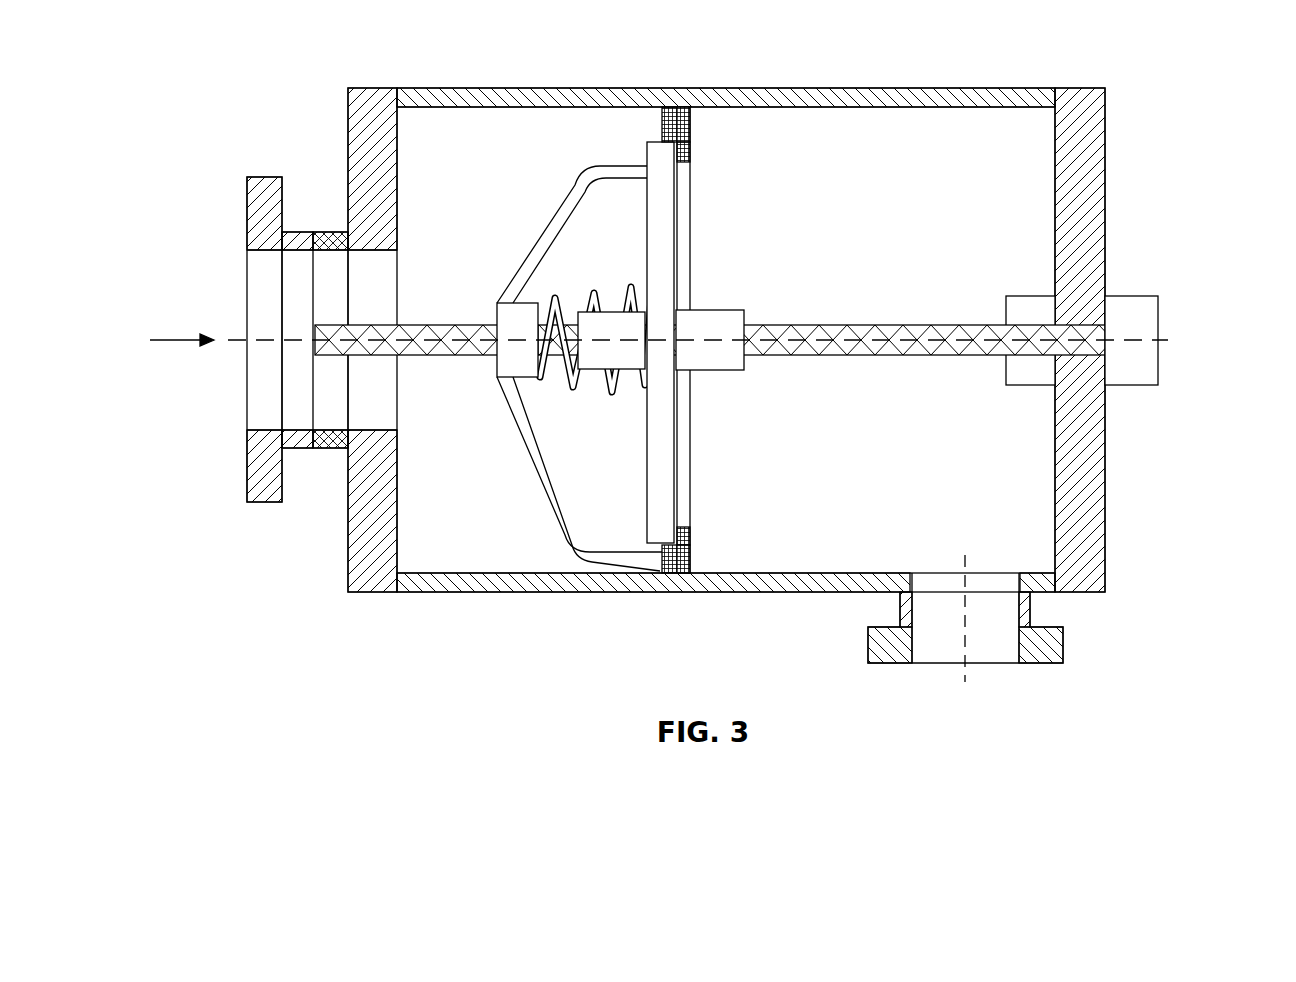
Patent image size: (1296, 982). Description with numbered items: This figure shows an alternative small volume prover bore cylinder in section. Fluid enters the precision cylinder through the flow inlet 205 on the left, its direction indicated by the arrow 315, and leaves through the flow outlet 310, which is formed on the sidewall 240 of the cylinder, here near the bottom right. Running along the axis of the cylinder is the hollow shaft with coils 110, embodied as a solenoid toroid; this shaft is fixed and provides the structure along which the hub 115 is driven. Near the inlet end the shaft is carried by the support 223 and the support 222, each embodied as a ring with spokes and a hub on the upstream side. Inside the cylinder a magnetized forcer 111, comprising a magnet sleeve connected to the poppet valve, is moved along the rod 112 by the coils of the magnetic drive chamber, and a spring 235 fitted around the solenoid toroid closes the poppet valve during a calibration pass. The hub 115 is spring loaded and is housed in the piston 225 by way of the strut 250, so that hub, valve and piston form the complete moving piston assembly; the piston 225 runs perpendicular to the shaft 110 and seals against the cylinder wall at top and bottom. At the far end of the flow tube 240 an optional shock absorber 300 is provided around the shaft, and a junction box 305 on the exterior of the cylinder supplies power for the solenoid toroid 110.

The solenoid toroid 110 is at (893, 325).
The magnetized forcer 111 is at (568, 295).
The rod 112 is at (452, 338).
The hub 115 is at (718, 310).
The flow inlet 205 is at (247, 308).
The support 222 is at (333, 448).
The support 223 is at (333, 237).
The piston 225 is at (690, 132).
The spring 235 is at (557, 300).
The sidewall 240 is at (628, 593).
The strut 250 is at (495, 377).
The shock absorber 300 is at (1006, 367).
The junction box 305 is at (1160, 358).
The flow outlet 310 is at (868, 643).
The arrow 315 is at (178, 343).